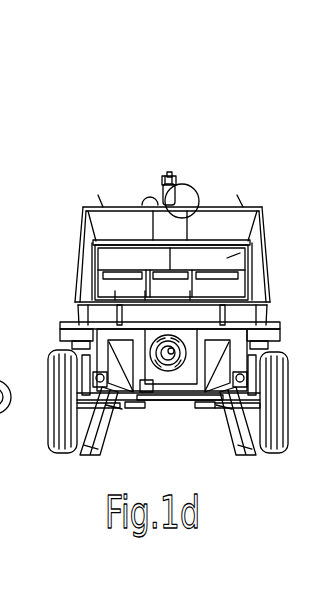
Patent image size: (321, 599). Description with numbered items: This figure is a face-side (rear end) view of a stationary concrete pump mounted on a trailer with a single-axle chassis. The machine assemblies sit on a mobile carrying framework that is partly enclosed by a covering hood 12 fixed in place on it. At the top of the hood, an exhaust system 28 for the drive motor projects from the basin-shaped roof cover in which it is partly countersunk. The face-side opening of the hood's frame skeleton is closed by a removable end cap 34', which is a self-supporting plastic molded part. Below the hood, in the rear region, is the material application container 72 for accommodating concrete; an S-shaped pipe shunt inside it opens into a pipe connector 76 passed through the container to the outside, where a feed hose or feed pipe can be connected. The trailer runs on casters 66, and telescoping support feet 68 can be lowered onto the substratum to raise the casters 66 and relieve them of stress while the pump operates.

The covering hood 12 is at (78, 236).
The exhaust system 28 is at (195, 188).
The end cap 34' is at (190, 231).
The pipe connector 76 is at (262, 288).
The material application container 72 is at (84, 443).
The telescoping support feet 68 is at (112, 430).
The casters 66 is at (287, 432).